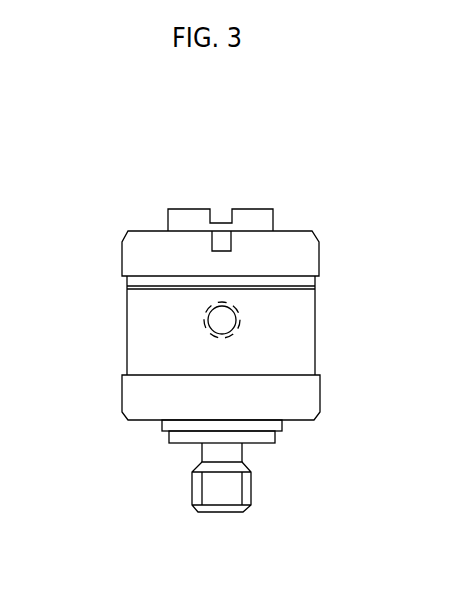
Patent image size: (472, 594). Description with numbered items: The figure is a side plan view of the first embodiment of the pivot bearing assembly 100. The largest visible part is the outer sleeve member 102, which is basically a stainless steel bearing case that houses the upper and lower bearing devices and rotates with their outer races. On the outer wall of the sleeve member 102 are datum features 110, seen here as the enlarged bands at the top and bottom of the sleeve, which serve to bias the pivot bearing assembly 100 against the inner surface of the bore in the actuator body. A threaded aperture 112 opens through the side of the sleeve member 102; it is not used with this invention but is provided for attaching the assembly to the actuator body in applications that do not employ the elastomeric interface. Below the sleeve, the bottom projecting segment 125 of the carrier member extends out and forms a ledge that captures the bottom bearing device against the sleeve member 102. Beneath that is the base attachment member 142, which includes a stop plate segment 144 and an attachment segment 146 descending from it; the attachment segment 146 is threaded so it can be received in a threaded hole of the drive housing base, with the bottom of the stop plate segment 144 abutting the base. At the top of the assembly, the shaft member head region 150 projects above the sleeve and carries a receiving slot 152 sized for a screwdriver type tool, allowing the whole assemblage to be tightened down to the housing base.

The pivot bearing assembly 100 is at (218, 174).
The outer sleeve member 102 is at (290, 335).
The datum features 110 is at (128, 243).
The threaded aperture 112 is at (222, 320).
The bottom projecting segment 125 is at (277, 427).
The base attachment member 142 is at (208, 452).
The stop plate segment 144 is at (257, 438).
The attachment segment 146 is at (230, 497).
The shaft member head region 150 is at (183, 219).
The receiving slot 152 is at (218, 212).